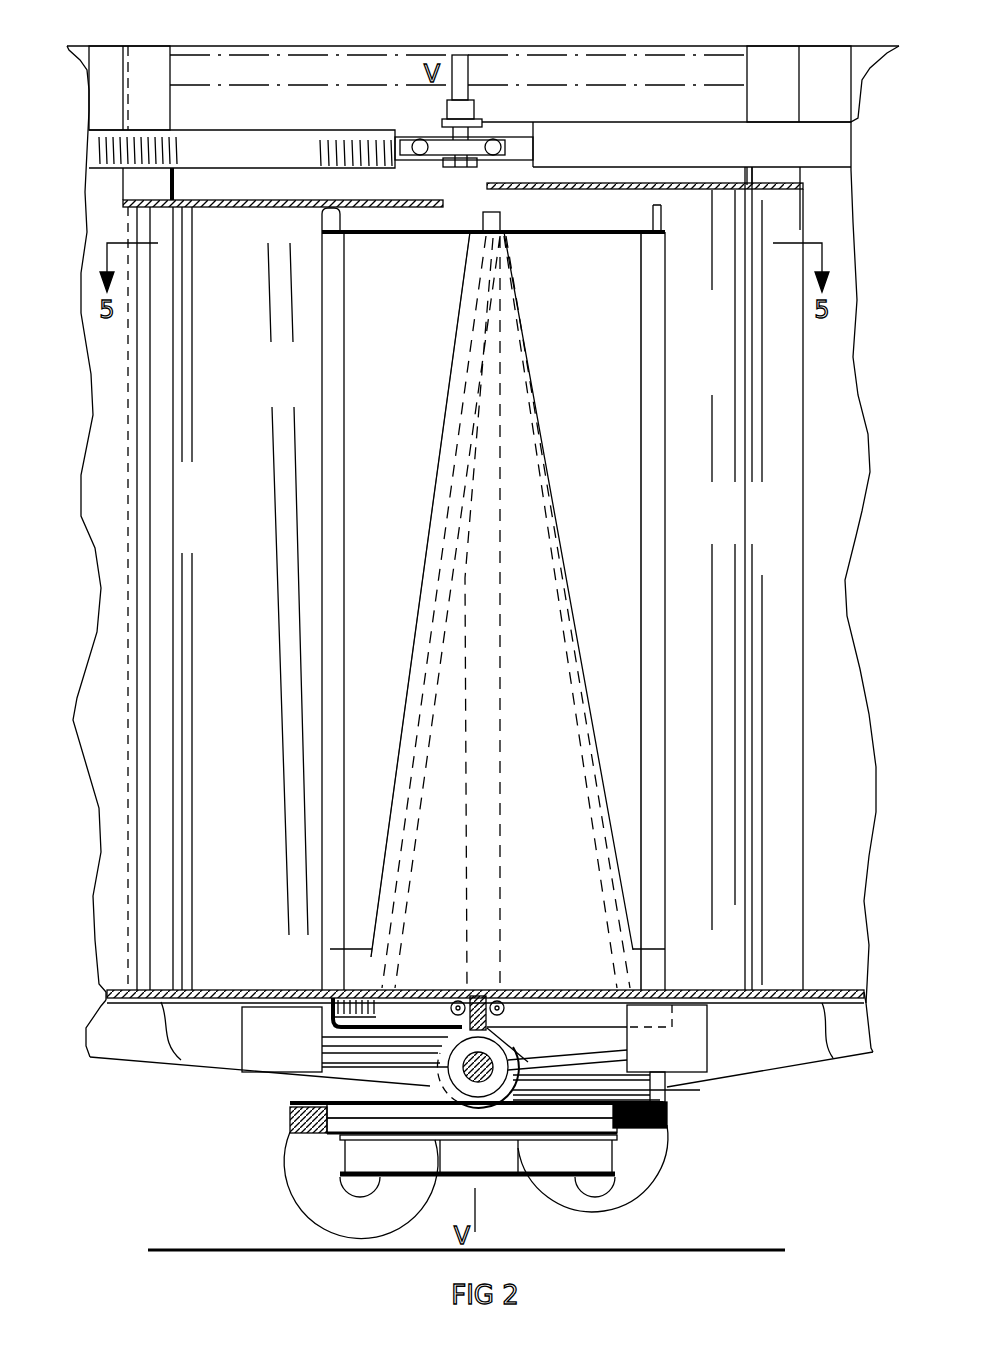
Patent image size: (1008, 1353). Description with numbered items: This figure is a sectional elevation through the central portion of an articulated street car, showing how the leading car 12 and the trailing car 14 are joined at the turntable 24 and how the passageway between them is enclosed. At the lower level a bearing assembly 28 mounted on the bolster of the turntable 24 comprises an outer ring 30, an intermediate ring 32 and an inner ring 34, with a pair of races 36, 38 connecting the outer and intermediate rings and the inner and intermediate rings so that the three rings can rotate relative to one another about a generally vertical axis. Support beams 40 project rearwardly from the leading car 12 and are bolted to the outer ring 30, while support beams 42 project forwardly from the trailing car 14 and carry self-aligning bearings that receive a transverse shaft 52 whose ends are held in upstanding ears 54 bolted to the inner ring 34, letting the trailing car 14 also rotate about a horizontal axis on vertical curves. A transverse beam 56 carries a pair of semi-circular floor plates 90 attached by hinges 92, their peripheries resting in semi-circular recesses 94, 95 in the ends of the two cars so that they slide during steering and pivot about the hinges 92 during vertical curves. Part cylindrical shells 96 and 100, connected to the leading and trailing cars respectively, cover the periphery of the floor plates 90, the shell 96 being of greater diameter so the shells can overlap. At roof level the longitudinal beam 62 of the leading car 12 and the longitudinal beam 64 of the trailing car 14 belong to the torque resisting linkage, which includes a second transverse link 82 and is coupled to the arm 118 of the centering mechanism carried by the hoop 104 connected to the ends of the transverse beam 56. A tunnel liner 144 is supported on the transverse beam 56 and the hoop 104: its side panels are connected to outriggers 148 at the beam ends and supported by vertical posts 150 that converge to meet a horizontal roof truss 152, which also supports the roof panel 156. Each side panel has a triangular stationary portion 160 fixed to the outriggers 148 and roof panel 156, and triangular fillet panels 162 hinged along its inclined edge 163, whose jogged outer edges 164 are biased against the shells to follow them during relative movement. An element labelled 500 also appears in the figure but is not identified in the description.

The leading car 12 is at (785, 1078).
The trailing car 14 is at (192, 1078).
The turntable 24 is at (672, 1094).
The bearing assembly 28 is at (672, 1130).
The outer ring 30 is at (290, 1118).
The intermediate ring 32 is at (320, 1147).
The inner ring 34 is at (333, 1098).
The race 36 is at (303, 1140).
The race 38 is at (295, 1195).
The support beams 40 is at (628, 1067).
The support beams 42 is at (322, 1043).
The transverse shaft 52 is at (411, 1156).
The upstanding ears 54 is at (477, 1168).
The transverse beam 56 is at (490, 1028).
The longitudinal beam 62 is at (666, 144).
The longitudinal beam 64 is at (242, 149).
The second transverse link 82 is at (510, 150).
The floor plates 90 is at (232, 985).
The hinges 92 is at (456, 988).
The semi-circular recess 94 is at (830, 1062).
The semi-circular recess 95 is at (180, 1070).
The part cylindrical shell 96 is at (751, 578).
The part cylindrical shell 100 is at (187, 598).
The hoop 104 is at (468, 72).
The arm 118 is at (446, 108).
The tunnel liner 144 is at (622, 333).
The outriggers 148 is at (318, 988).
The vertical posts 150 is at (518, 305).
The roof truss 152 is at (500, 220).
The roof panel 156 is at (318, 212).
The stationary portion 160 is at (506, 612).
The fillet panels 162 is at (493, 611).
The inclined edge 163 is at (452, 372).
The outer edges 164 is at (692, 372).
The block 500 is at (476, 110).